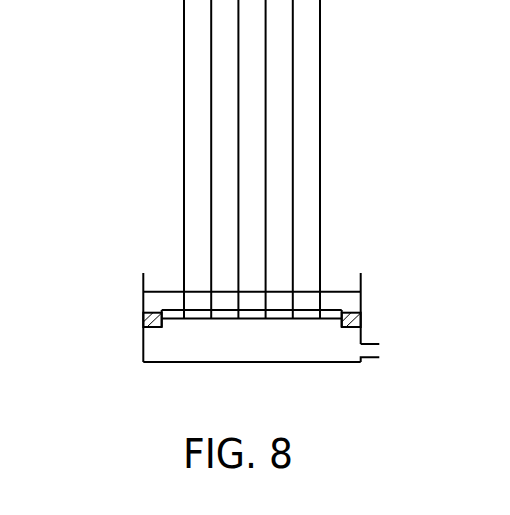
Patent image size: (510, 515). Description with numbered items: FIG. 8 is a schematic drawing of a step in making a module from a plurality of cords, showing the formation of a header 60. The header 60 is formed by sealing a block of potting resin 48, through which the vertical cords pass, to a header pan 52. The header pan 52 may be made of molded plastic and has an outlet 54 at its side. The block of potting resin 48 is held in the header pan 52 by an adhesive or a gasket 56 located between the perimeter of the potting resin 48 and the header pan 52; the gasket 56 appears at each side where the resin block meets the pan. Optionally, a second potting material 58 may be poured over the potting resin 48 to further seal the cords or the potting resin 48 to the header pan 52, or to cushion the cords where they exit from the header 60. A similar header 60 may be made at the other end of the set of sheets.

The block of potting resin 48 is at (178, 309).
The header pan 52 is at (330, 362).
The outlet 54 is at (366, 341).
The gasket 56 is at (361, 320).
The second potting material 58 is at (344, 292).
The header 60 is at (100, 329).